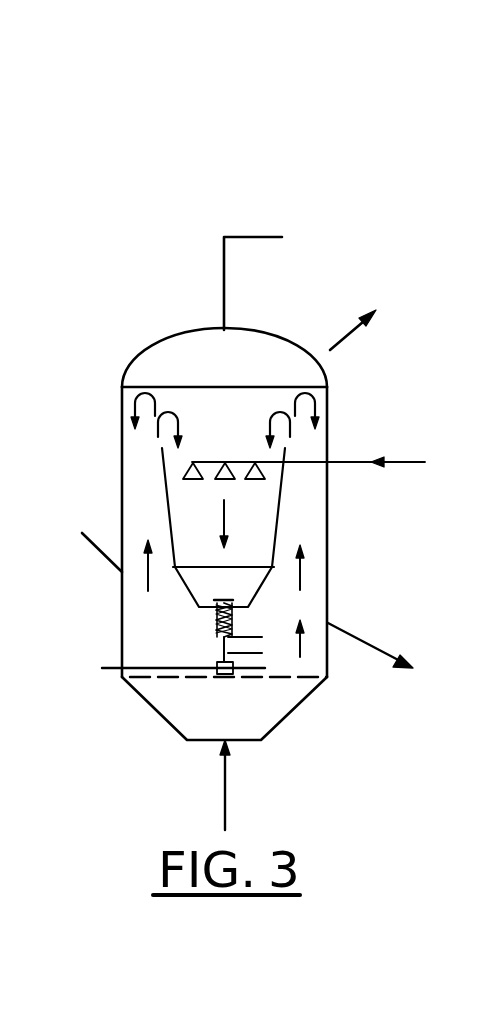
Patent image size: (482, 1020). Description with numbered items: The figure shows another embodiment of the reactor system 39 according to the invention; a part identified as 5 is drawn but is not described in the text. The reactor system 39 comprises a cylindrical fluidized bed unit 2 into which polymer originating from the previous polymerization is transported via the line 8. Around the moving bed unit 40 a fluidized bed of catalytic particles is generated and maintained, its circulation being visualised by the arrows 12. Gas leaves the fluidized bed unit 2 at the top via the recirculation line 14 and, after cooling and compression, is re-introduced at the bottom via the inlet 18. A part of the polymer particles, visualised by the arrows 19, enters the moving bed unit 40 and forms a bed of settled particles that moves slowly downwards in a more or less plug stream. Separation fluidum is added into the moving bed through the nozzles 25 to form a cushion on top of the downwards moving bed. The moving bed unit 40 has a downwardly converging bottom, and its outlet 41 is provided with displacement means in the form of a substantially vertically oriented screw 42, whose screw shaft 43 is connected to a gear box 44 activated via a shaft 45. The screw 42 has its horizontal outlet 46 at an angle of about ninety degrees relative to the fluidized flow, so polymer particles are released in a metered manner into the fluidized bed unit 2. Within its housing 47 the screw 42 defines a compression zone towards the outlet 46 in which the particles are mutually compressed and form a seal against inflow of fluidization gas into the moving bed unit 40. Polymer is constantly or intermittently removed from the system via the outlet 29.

The fluidized bed unit 2 is at (331, 560).
The reactor system 5 is at (478, 548).
The line 8 is at (97, 553).
The arrows 12 is at (134, 404).
The recirculation line 14 is at (224, 268).
The inlet 18 is at (228, 782).
The arrows 19 is at (175, 416).
The nozzles 25 is at (222, 480).
The outlet 29 is at (350, 632).
The reactor system 39 is at (271, 446).
The moving bed unit 40 is at (283, 507).
The outlet 41 is at (213, 528).
The screw 42 is at (215, 615).
The screw shaft 43 is at (223, 645).
The gear box 44 is at (262, 678).
The shaft 45 is at (148, 670).
The outlet 46 is at (254, 637).
The housing 47 is at (249, 602).